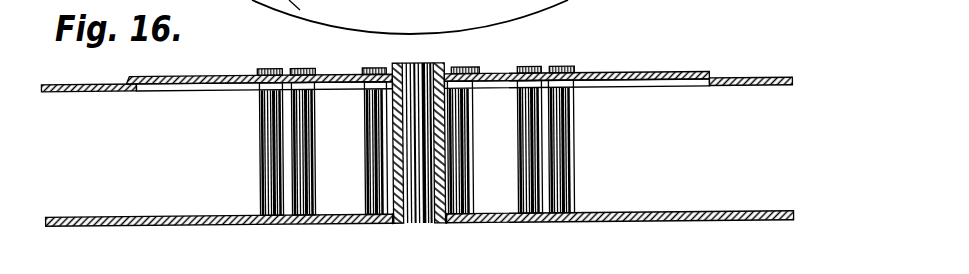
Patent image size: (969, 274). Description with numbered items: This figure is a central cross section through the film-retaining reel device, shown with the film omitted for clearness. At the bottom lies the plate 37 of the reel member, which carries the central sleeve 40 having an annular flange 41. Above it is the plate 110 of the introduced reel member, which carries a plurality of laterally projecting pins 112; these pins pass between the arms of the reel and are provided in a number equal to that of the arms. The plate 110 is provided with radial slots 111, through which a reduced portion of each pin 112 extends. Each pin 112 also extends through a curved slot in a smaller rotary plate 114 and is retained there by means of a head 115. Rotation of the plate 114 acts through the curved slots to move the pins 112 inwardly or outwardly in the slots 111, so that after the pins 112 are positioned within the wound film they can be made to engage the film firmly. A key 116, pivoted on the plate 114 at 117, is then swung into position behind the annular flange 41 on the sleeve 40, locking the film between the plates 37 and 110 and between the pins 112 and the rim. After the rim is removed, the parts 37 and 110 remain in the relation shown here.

The plate 37 is at (223, 193).
The sleeve 40 is at (398, 223).
The annular flange 41 is at (436, 66).
The plate 110 is at (735, 79).
The radial slots 111 is at (642, 84).
The pins 112 is at (577, 129).
The rotary plate 114 is at (640, 74).
The head 115 is at (566, 68).
The key 116 is at (392, 72).
The pivot 117 is at (470, 72).